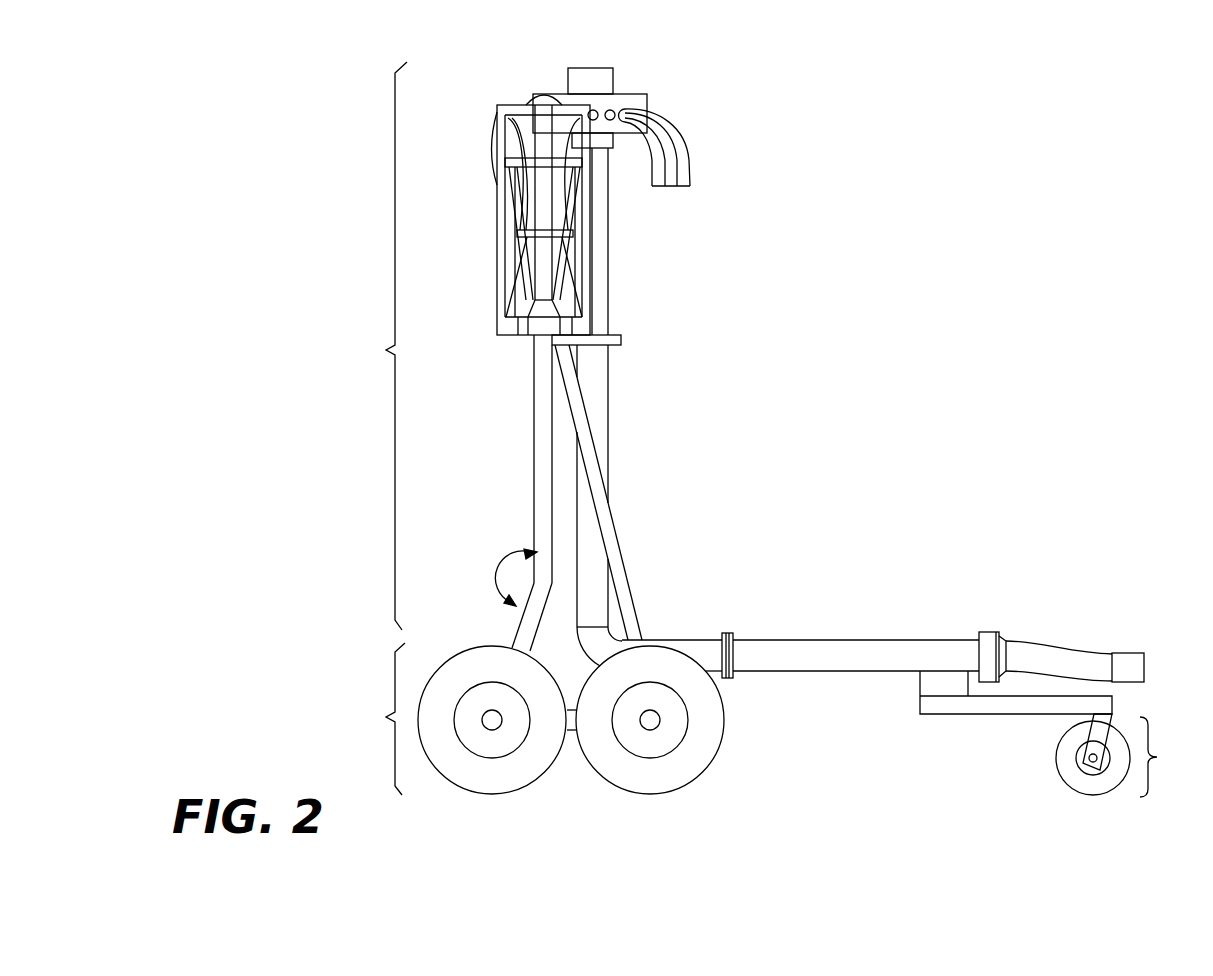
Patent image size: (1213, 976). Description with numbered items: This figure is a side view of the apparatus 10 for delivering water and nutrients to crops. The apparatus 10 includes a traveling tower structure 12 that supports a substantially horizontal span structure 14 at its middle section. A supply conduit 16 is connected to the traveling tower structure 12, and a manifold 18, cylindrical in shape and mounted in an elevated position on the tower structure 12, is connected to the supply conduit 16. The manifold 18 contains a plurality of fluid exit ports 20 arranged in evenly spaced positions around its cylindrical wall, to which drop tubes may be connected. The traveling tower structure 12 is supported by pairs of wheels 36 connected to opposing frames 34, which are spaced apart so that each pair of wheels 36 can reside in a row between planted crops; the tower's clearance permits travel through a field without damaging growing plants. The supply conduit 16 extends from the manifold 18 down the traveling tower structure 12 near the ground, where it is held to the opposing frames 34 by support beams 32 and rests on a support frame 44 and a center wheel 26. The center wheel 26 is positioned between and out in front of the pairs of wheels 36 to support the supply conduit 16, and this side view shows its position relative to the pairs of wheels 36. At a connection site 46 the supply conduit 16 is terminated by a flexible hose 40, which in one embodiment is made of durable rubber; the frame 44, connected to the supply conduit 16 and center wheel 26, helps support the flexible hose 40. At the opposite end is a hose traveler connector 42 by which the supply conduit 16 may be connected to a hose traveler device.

The apparatus 10 is at (962, 319).
The traveling tower structure 12 is at (666, 360).
The substantially horizontal span structure 14 is at (744, 243).
The supply conduit 16 is at (600, 242).
The manifold 18 is at (686, 100).
The fluid exit ports 20 is at (593, 110).
The center wheel 26 is at (1125, 755).
The support beams 32 is at (624, 587).
The opposing frames 34 is at (542, 492).
The pairs of wheels 36 is at (536, 719).
The flexible hose 40 is at (1057, 652).
The hose traveler connector 42 is at (1128, 660).
The support frame 44 is at (1005, 710).
The connection site 46 is at (992, 612).